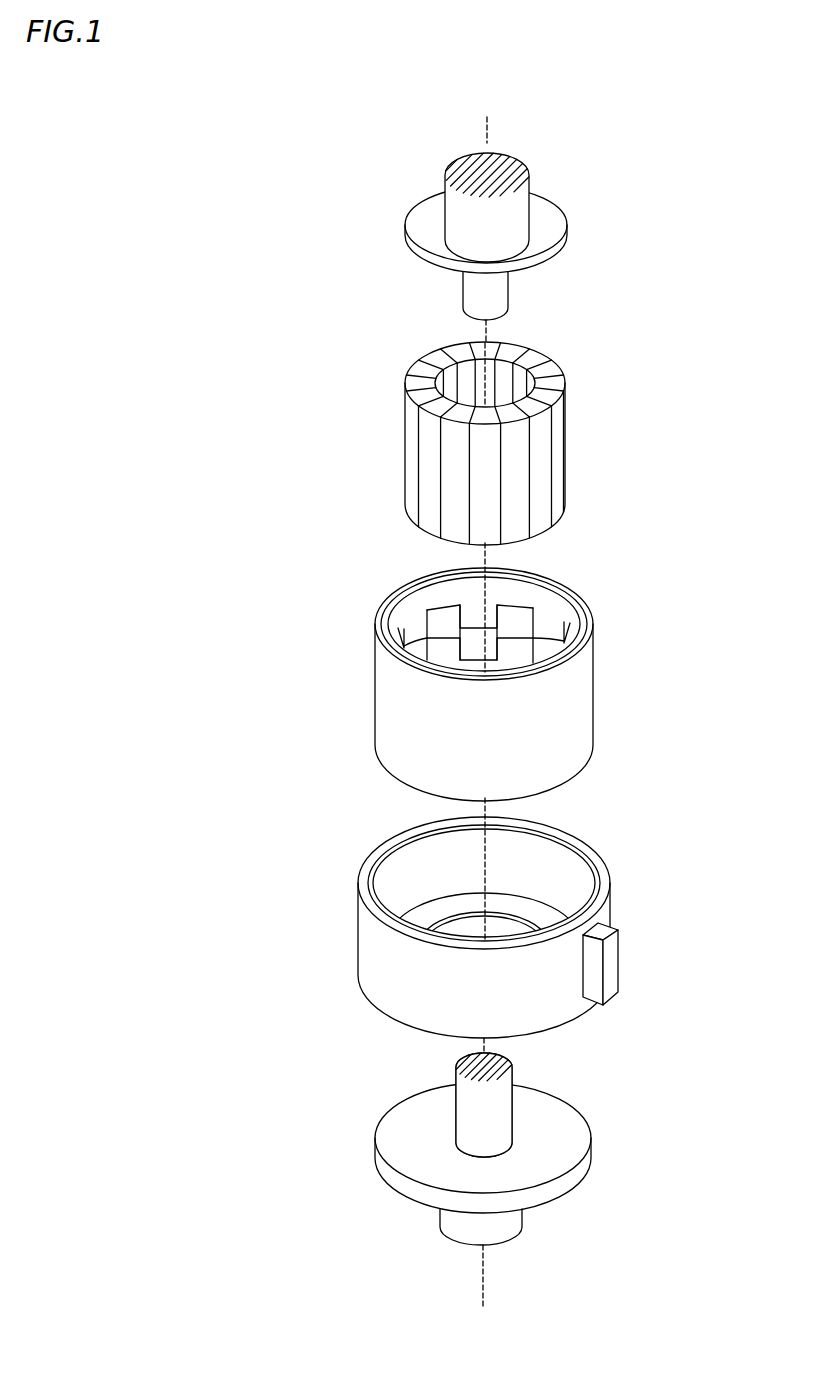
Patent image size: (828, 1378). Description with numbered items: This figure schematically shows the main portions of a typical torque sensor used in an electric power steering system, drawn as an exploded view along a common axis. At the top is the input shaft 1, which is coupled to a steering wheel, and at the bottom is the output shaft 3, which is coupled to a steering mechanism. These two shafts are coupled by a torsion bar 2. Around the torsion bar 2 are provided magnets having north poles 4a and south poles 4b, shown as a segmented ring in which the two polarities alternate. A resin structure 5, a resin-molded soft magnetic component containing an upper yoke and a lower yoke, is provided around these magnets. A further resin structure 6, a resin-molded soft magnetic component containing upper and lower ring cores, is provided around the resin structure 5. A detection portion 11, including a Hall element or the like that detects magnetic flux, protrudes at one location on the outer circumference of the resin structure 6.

The input shaft 1 is at (515, 250).
The torsion bar 2 is at (487, 293).
The output shaft 3 is at (503, 1230).
The north poles 4a is at (460, 452).
The south poles 4b is at (487, 452).
The resin structure 5 is at (397, 708).
The resin structure 6 is at (373, 945).
The detection portion 11 is at (610, 962).